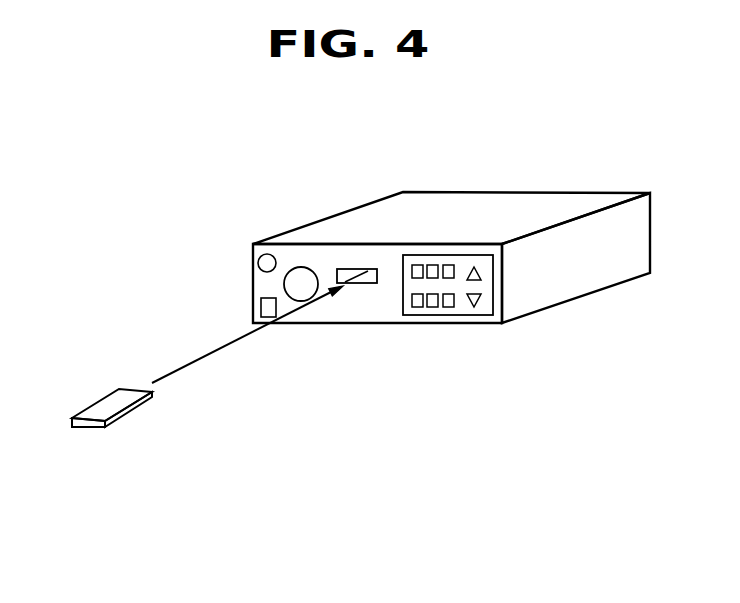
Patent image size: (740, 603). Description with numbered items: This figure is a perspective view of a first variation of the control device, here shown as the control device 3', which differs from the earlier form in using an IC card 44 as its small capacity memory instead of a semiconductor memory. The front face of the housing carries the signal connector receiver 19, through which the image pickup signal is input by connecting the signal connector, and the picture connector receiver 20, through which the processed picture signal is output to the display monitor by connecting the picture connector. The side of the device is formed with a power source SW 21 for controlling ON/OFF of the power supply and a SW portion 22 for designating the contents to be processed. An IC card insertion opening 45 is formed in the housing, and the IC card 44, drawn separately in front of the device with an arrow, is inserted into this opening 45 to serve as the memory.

The control device 3' is at (451, 217).
The signal connector receiver 19 is at (292, 264).
The picture connector receiver 20 is at (258, 262).
The power source SW 21 is at (258, 308).
The SW portion 22 is at (427, 253).
The IC card 44 is at (87, 430).
The IC card insertion opening 45 is at (363, 283).